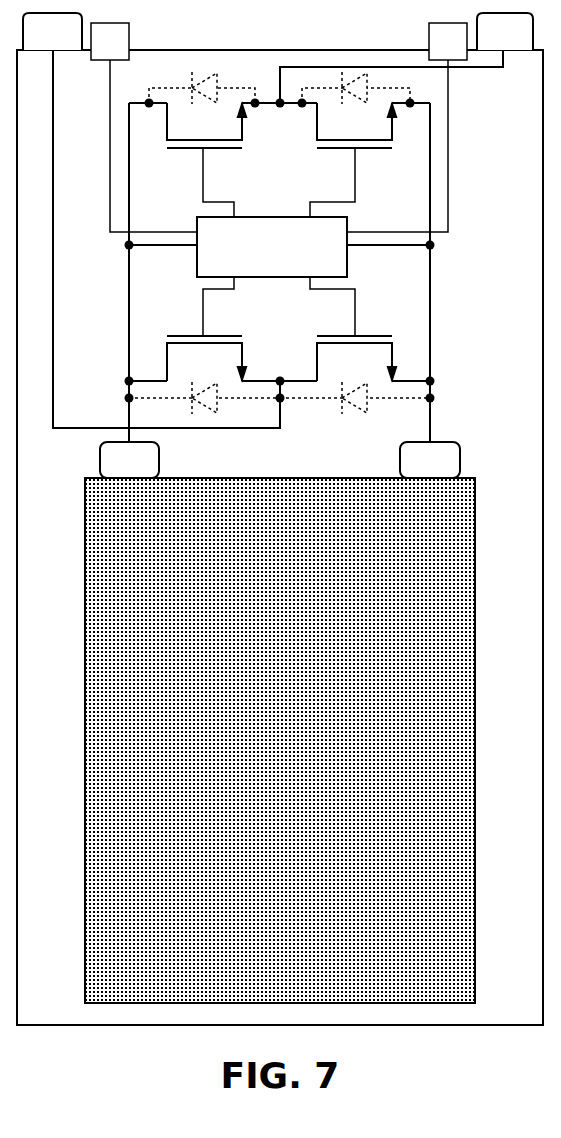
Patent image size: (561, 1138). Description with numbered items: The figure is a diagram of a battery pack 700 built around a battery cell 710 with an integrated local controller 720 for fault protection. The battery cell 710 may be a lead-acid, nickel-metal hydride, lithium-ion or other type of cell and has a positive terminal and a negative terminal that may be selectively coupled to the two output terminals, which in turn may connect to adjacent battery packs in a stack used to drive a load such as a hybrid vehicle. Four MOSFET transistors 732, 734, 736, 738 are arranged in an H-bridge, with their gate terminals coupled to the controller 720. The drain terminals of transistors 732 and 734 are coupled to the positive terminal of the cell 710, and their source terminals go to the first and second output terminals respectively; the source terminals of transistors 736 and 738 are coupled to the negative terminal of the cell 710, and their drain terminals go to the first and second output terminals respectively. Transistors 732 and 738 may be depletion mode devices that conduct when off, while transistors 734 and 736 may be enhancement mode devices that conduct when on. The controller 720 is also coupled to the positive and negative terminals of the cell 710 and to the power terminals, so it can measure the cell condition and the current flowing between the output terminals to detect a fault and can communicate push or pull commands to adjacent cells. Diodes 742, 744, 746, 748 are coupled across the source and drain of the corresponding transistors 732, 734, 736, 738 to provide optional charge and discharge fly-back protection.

The battery pack 700 is at (261, 1136).
The battery cell 710 is at (298, 759).
The local controller 720 is at (255, 265).
The MOSFET transistor 732 is at (207, 330).
The MOSFET transistor 734 is at (207, 159).
The MOSFET transistor 736 is at (354, 330).
The MOSFET transistor 738 is at (354, 159).
The diode 742 is at (204, 402).
The diode 744 is at (202, 81).
The diode 746 is at (355, 402).
The diode 748 is at (355, 86).